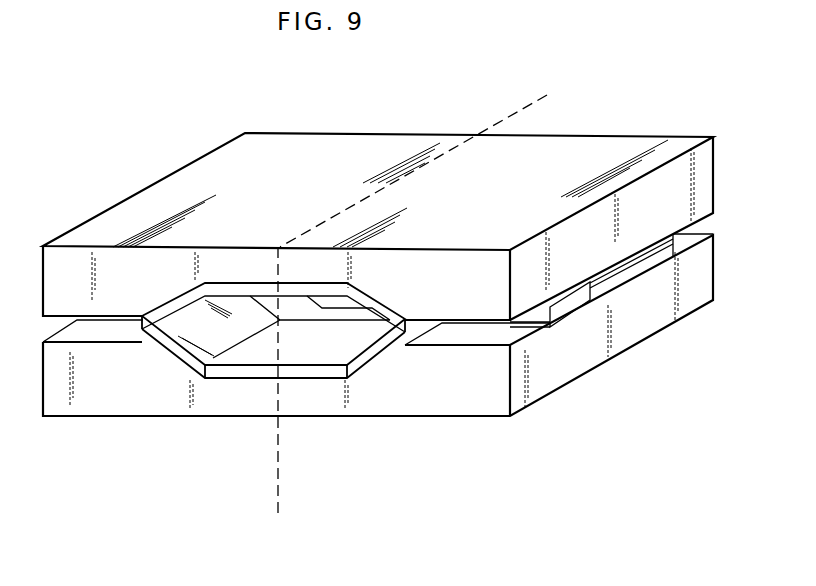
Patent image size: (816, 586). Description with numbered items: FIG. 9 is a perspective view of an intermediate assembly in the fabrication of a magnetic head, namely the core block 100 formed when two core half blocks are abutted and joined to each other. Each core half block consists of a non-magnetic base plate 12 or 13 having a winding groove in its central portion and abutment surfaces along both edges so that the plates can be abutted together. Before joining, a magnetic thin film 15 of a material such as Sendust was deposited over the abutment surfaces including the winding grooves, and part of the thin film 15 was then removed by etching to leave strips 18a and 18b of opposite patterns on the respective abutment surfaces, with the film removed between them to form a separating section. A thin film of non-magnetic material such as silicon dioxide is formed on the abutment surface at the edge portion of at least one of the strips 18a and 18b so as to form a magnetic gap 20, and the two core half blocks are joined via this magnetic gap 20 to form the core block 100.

The core block 100 is at (327, 128).
The non-magnetic base plate 12 is at (628, 144).
The non-magnetic base plate 13 is at (398, 419).
The magnetic thin film 15 is at (240, 373).
The strip 18a is at (553, 308).
The strip 18b is at (677, 245).
The magnetic gap 20 is at (641, 258).